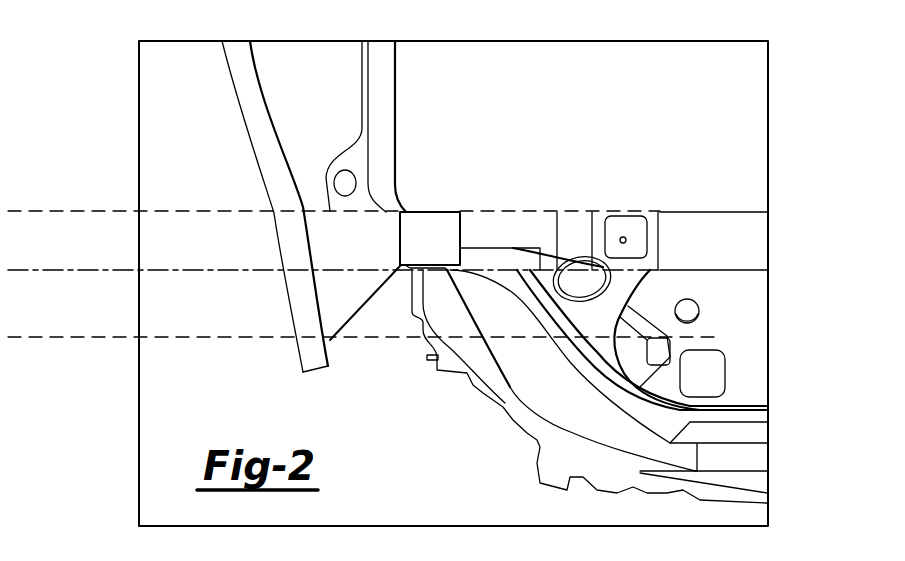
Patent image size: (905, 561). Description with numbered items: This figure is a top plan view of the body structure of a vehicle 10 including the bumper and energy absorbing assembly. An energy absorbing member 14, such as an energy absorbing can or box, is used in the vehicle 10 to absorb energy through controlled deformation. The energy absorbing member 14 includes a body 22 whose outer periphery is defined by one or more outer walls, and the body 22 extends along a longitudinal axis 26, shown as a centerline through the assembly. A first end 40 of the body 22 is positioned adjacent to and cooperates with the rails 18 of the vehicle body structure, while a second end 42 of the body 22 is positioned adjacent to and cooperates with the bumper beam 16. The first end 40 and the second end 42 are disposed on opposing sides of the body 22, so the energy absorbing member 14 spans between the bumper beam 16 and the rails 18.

The vehicle 10 is at (795, 56).
The energy absorbing member 14 is at (380, 260).
The bumper beam 16 is at (246, 160).
The rails 18 is at (580, 227).
The body 22 is at (330, 233).
The longitudinal axis 26 is at (69, 267).
The first end 40 is at (445, 227).
The second end 42 is at (318, 308).